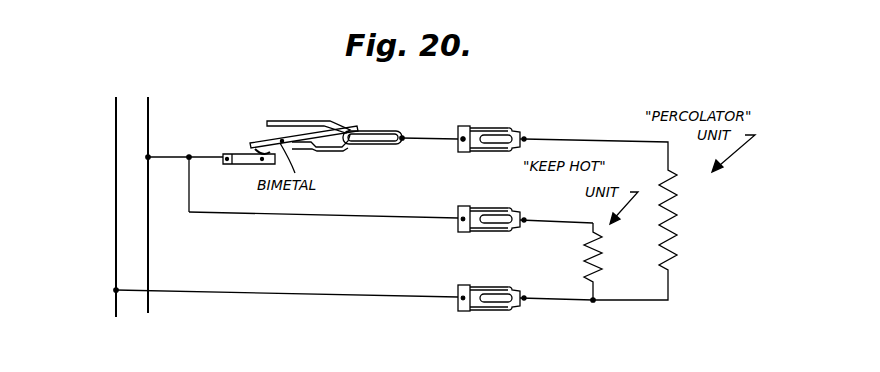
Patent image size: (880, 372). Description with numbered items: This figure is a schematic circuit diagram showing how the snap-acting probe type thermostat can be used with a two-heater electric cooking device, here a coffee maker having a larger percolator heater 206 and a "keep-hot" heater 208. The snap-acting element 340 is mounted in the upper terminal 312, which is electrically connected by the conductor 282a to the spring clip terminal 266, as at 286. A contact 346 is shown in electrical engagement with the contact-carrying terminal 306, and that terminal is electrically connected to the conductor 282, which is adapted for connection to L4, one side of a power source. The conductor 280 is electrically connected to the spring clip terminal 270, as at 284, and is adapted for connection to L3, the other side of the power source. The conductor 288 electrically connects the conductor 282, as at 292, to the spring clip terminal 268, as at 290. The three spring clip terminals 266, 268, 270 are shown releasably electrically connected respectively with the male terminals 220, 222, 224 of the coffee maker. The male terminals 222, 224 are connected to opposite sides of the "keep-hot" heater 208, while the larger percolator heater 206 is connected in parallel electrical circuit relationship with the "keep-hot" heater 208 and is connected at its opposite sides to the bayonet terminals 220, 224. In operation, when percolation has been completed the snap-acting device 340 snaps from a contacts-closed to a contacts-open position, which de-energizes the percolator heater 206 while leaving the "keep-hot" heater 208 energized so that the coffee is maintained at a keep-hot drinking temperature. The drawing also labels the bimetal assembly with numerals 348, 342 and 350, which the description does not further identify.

The power source side L3 is at (115, 309).
The power source side L4 is at (147, 311).
The conductor 282 is at (169, 157).
The connection point 292 is at (198, 147).
The conductor 288 is at (240, 213).
The conductor 280 is at (243, 290).
The conductor 282a is at (468, 107).
The connection point 290 is at (461, 218).
The connection point 284 is at (461, 296).
The contact-carrying terminal 306 is at (245, 162).
The contact 346 is at (253, 151).
The bimetal strip 348 is at (253, 144).
The snap-acting element 340 is at (292, 133).
The upper terminal 312 is at (312, 121).
The contact arm 342 is at (340, 130).
The insulating connector 350 is at (360, 131).
The spring clip terminal 266 is at (458, 152).
The connection point 286 is at (461, 141).
The male terminal 220 is at (525, 136).
The spring clip terminal 268 is at (458, 225).
The male terminal 222 is at (527, 223).
The spring clip terminal 270 is at (457, 307).
The male terminal 224 is at (528, 305).
The percolator heater 206 is at (673, 223).
The keep-hot heater 208 is at (600, 257).